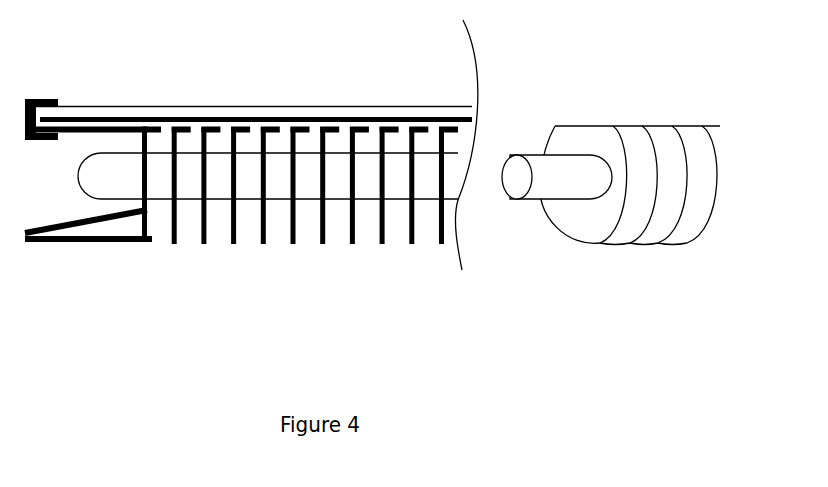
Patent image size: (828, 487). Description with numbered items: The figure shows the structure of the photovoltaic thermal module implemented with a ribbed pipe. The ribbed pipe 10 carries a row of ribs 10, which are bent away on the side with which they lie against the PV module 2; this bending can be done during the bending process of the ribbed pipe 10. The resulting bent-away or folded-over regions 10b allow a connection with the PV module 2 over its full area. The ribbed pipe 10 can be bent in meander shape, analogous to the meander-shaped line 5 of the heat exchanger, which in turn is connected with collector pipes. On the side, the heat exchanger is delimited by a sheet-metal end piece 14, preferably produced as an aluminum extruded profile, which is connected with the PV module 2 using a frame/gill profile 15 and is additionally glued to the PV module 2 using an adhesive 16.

The photovoltaic module 2 is at (448, 111).
The meander-shaped line 5 is at (452, 183).
The ribbed pipe 10 is at (233, 243).
The bent-away regions 10b is at (328, 127).
The sheet-metal end piece 14 is at (103, 242).
The frame/gill profile 15 is at (43, 97).
The adhesive 16 is at (263, 125).